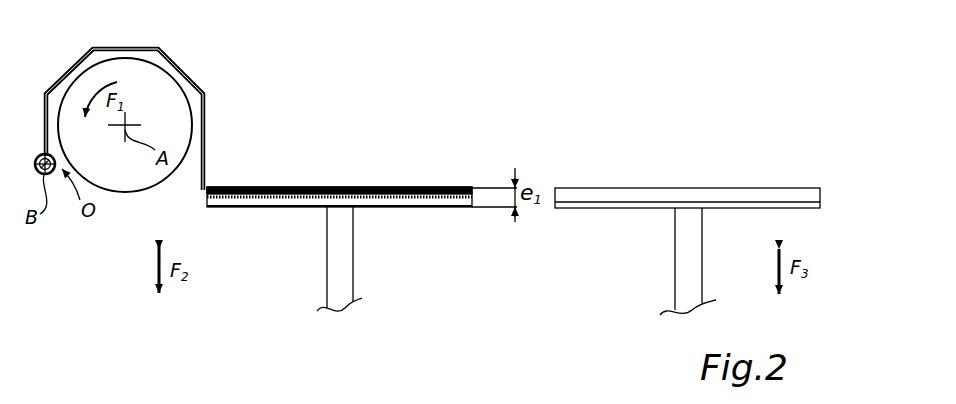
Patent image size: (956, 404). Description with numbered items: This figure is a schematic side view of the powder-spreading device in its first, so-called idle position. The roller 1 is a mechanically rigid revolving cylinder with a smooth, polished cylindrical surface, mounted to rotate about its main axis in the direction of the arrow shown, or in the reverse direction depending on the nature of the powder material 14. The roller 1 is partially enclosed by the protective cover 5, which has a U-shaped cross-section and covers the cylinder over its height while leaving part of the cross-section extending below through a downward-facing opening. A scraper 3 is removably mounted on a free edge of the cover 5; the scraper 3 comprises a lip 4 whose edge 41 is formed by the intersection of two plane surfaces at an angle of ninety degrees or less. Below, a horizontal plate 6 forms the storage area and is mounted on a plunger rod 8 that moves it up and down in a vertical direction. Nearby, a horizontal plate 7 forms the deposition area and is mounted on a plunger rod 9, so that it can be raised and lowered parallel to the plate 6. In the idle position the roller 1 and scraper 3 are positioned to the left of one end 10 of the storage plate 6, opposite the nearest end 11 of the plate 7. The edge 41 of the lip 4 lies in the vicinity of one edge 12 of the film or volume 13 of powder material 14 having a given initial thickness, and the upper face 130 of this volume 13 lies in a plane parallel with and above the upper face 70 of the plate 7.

The roller 1 is at (152, 85).
The scraper 3 is at (206, 160).
The lip 4 is at (202, 193).
The protective cover 5 is at (132, 47).
The horizontal plate 6 is at (417, 207).
The horizontal plate 7 is at (699, 173).
The plunger rod 8 is at (340, 252).
The plunger rod 9 is at (683, 252).
The end of the storage plate 10 is at (205, 215).
The end of the plate 11 is at (473, 214).
The edge of the film 12 is at (212, 178).
The film or volume 13 is at (387, 188).
The powder material 14 is at (447, 188).
The edge 41 is at (211, 187).
The upper face of the plate 70 is at (693, 181).
The upper face of the volume 130 is at (365, 187).